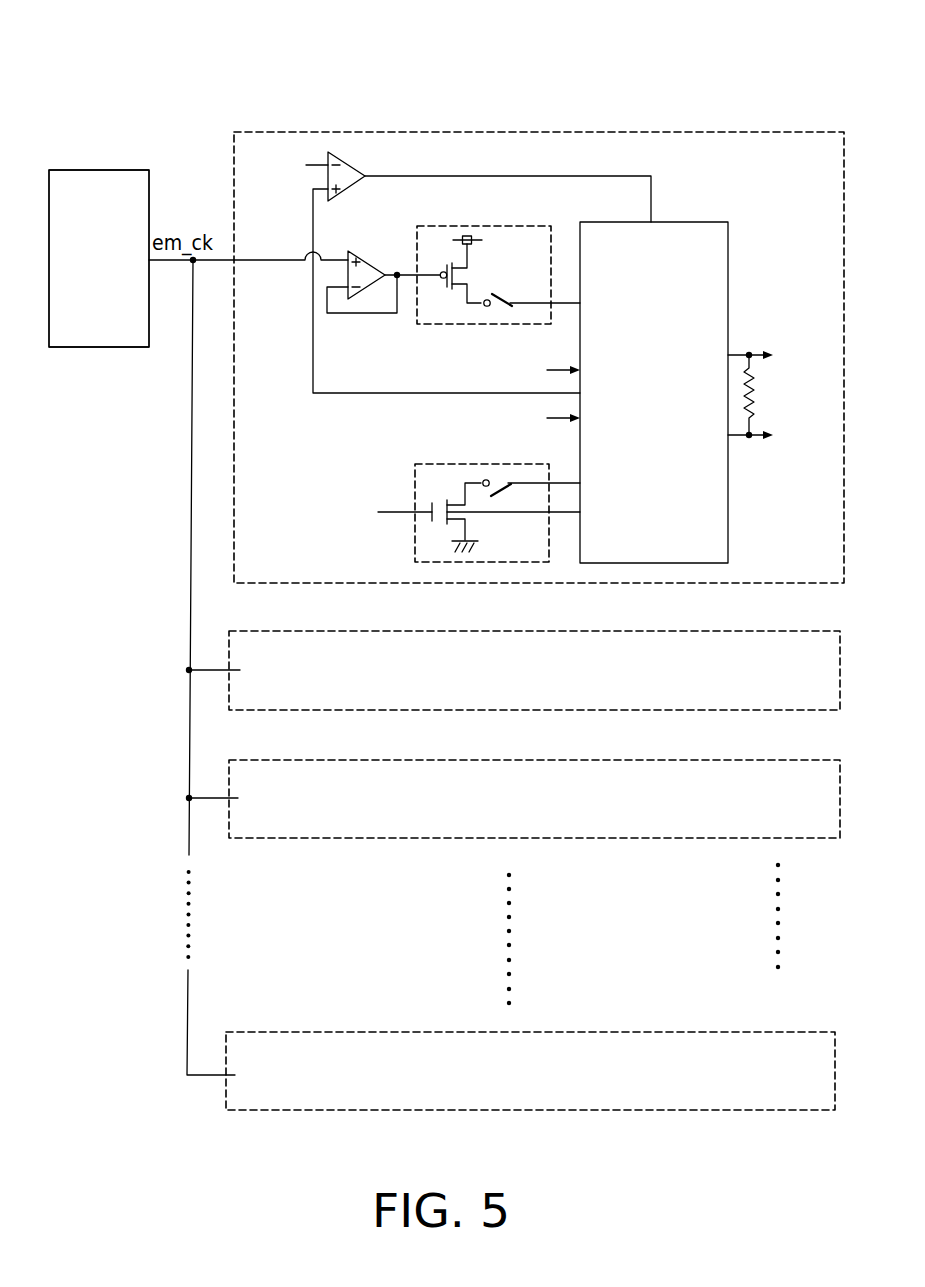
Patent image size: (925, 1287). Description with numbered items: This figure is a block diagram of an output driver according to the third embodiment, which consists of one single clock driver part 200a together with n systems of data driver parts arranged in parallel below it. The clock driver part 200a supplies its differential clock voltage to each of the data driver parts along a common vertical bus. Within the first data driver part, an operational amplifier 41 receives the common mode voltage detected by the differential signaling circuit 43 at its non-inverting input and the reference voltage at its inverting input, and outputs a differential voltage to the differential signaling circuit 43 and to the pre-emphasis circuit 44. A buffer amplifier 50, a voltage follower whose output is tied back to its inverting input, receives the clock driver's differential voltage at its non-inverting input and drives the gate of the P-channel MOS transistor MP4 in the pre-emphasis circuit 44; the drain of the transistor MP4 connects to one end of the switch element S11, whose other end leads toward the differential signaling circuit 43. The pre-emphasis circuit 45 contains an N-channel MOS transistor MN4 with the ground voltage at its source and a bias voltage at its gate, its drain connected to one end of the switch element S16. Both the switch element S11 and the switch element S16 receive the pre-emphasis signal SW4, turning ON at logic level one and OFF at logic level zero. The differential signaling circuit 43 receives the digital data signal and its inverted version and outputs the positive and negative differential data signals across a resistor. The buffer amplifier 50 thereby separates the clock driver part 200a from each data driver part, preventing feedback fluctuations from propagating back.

The clock driver part 200a is at (117, 171).
The operational amplifier 41 is at (350, 168).
The differential signaling circuit 43 is at (688, 222).
The pre-emphasis circuit 44 is at (505, 226).
The pre-emphasis circuit 45 is at (521, 464).
The buffer amplifier 50 is at (364, 259).
The P-channel MOS transistor MP4 is at (446, 287).
The N-channel MOS transistor MN4 is at (434, 503).
The switch element S11 is at (501, 295).
The switch element S16 is at (505, 489).
The pre-emphasis signal SW4 is at (501, 315).